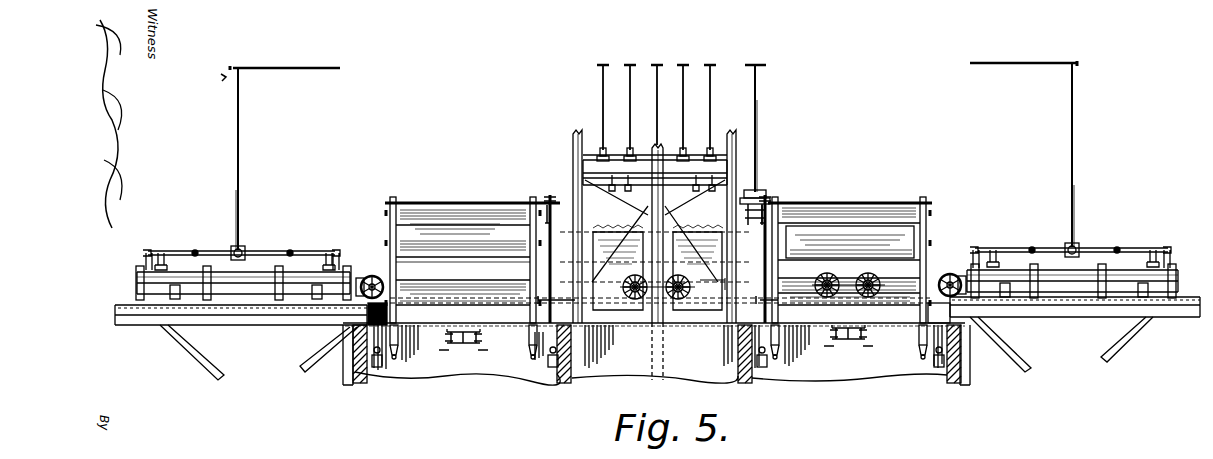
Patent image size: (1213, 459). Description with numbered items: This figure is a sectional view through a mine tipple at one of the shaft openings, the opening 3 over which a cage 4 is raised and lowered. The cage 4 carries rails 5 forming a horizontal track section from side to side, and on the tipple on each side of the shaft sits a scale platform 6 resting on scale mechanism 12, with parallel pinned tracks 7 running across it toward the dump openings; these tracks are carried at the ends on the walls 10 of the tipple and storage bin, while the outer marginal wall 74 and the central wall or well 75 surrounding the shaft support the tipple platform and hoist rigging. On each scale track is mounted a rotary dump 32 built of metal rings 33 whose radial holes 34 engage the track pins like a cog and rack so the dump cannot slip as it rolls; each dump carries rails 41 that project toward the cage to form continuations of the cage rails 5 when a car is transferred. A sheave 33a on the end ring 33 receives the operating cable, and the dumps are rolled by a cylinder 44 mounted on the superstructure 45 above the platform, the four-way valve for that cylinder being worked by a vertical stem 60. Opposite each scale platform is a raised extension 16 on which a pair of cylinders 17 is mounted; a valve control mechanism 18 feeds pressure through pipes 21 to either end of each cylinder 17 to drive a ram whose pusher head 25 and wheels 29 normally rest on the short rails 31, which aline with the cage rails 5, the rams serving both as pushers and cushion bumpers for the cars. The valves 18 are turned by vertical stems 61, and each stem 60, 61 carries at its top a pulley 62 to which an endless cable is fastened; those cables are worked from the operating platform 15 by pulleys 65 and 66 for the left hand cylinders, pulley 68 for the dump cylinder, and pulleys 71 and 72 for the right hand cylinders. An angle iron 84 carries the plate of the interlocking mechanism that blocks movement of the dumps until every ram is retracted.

The opening 3 is at (694, 379).
The cage 4 is at (673, 182).
The rails 5 is at (707, 296).
The scale platform 6 is at (492, 323).
The tracks 7 is at (400, 323).
The walls 10 is at (512, 374).
The scale mechanism 12 is at (490, 350).
The operating platform 15 is at (593, 175).
The extension 16 is at (117, 316).
The cylinders 17 is at (242, 271).
The valve control mechanism 18 is at (246, 252).
The pipes 21 is at (203, 251).
The ram head 25 is at (389, 257).
The wheels 29 is at (372, 275).
The rails 31 is at (352, 307).
The rotary dump 32 is at (518, 241).
The rings 33 is at (538, 273).
The sheave 33a is at (752, 262).
The radial holes 34 is at (530, 251).
The rails 41 is at (556, 298).
The cylinder 44 is at (760, 190).
The superstructure 45 is at (730, 152).
The vertical stem 60 is at (757, 112).
The vertical stems 61 is at (242, 207).
The pulley 62 is at (245, 68).
The pulley 65 is at (608, 64).
The pulley 66 is at (635, 64).
The pulley 68 is at (662, 64).
The pulley 71 is at (715, 64).
The pulley 72 is at (688, 64).
The marginal wall 74 is at (356, 383).
The central wall 75 is at (560, 383).
The angle iron 84 is at (660, 147).